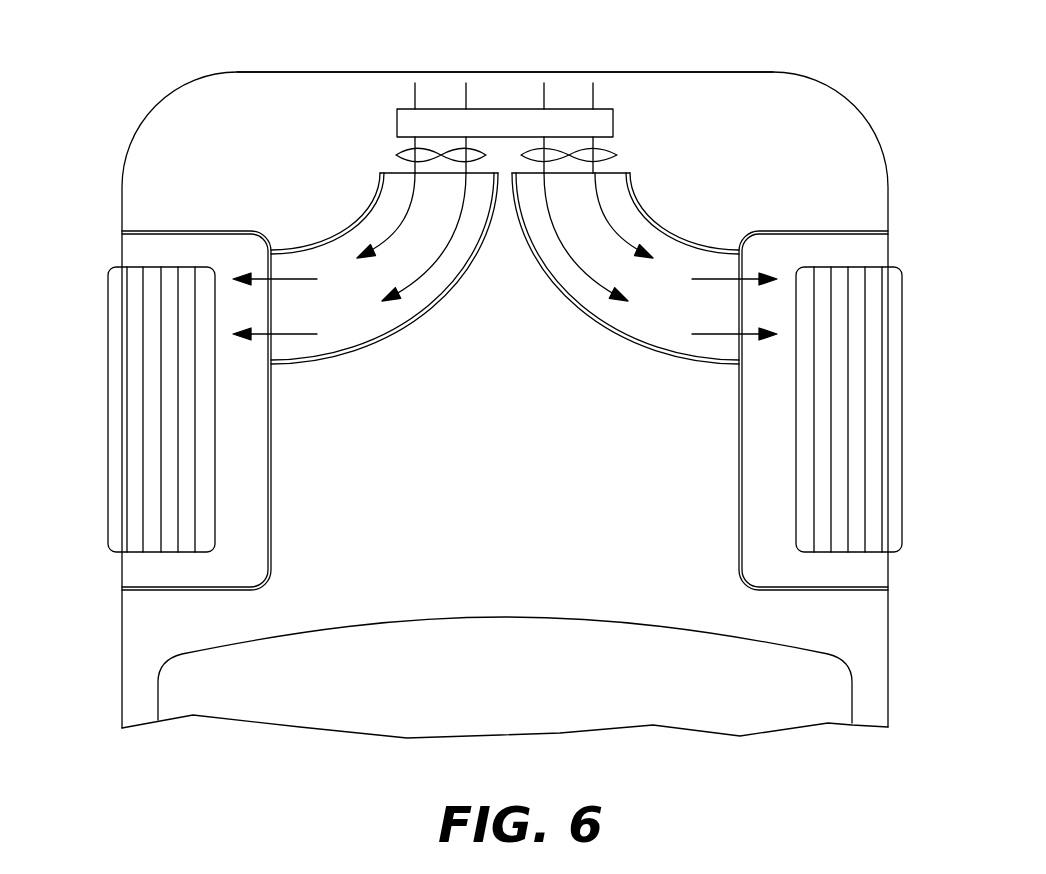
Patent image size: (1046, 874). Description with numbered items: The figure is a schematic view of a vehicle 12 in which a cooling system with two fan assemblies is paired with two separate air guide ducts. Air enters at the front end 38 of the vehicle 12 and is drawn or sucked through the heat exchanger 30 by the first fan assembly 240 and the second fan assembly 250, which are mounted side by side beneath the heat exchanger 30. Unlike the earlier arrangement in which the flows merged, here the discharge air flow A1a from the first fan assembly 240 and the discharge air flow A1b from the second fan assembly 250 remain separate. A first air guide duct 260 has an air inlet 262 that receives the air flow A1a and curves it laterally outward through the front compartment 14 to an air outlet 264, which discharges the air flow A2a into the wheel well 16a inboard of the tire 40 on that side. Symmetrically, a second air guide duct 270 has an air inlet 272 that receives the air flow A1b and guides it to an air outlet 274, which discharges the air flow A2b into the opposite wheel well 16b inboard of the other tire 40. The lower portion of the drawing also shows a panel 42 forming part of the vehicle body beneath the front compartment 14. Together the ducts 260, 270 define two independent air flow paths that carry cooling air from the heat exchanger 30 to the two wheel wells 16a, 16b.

The vehicle 12 is at (839, 62).
The front end 38 is at (338, 72).
The heat exchanger 30 is at (603, 125).
The first fan assembly 240 is at (405, 155).
The second fan assembly 250 is at (620, 155).
The first air guide duct 260 is at (404, 311).
The second air guide duct 270 is at (592, 305).
The air inlet 262 is at (384, 170).
The air outlet 264 is at (273, 347).
The air inlet 272 is at (622, 170).
The air outlet 274 is at (737, 347).
The tires 40 is at (137, 343).
The wheel well 16a is at (145, 572).
The wheel well 16b is at (868, 572).
The front compartment 14 is at (514, 520).
The bottom panel 42 is at (683, 705).
The discharge air flow A1a is at (412, 194).
The discharge air flow A1b is at (598, 194).
The air flow A2a is at (292, 281).
The air flow A2b is at (712, 281).